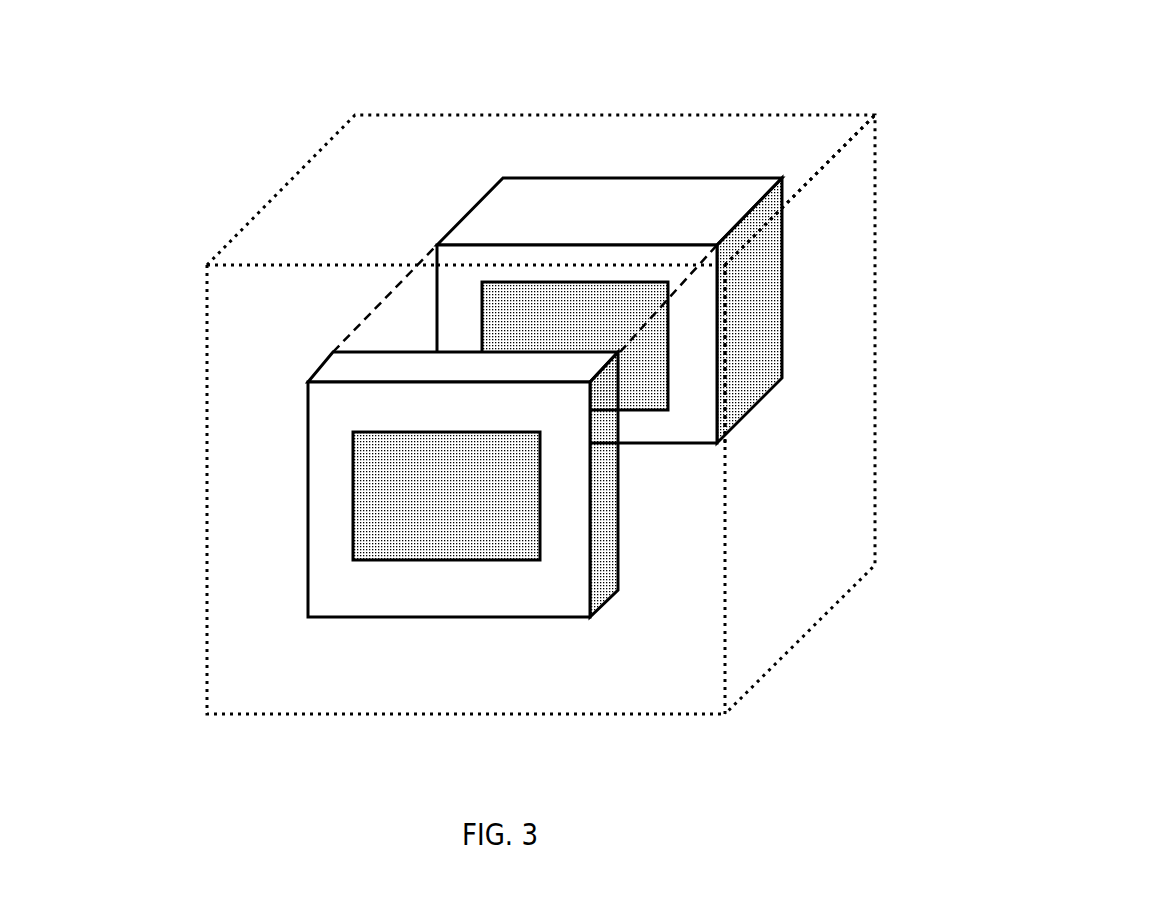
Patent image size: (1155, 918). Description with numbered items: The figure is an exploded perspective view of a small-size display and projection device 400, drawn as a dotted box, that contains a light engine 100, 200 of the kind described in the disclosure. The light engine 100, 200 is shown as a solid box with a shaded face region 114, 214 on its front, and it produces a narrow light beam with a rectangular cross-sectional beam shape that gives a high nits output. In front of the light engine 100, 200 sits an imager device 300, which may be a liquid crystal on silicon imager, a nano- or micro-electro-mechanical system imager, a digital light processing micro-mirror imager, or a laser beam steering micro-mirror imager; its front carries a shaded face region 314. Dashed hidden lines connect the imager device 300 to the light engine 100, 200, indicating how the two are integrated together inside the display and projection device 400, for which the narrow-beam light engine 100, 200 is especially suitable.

The first device 100 is at (609, 234).
The second device 200 is at (628, 190).
The first device face region 114 is at (796, 346).
The second device face region 214 is at (657, 353).
The imager device 300 is at (307, 499).
The third device face region 314 is at (353, 513).
The display and projection device 400 is at (242, 228).